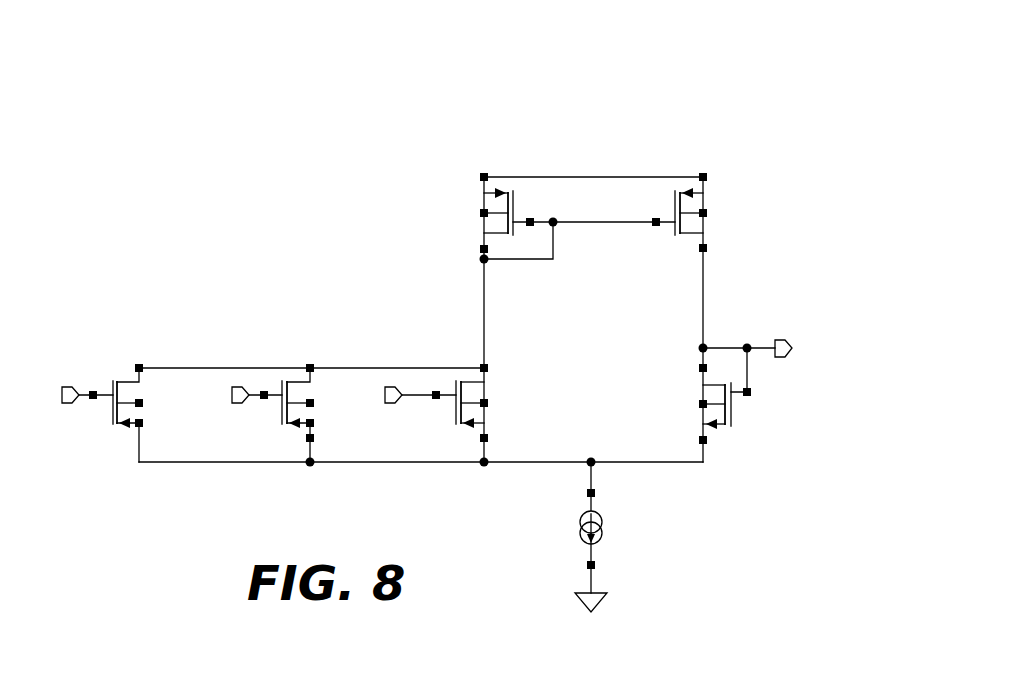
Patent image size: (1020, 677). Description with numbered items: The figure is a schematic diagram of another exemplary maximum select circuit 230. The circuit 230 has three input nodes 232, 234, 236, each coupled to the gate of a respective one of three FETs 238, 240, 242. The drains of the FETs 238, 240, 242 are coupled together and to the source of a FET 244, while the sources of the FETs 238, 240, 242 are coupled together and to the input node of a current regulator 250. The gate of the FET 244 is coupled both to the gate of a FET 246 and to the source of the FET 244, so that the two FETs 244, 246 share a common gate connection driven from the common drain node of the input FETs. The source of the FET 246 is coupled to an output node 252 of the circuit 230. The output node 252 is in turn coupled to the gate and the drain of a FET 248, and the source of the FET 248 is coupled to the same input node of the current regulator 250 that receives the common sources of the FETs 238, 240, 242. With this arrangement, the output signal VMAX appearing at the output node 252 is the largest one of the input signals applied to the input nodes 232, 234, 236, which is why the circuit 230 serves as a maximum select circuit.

The circuit 230 is at (632, 113).
The input node 232 is at (68, 383).
The input node 234 is at (237, 383).
The input node 236 is at (390, 383).
The FET 238 is at (142, 410).
The FET 240 is at (312, 410).
The FET 242 is at (487, 410).
The FET 244 is at (515, 208).
The FET 246 is at (700, 206).
The FET 248 is at (732, 412).
The current regulator 250 is at (603, 529).
The output node 252 is at (778, 340).